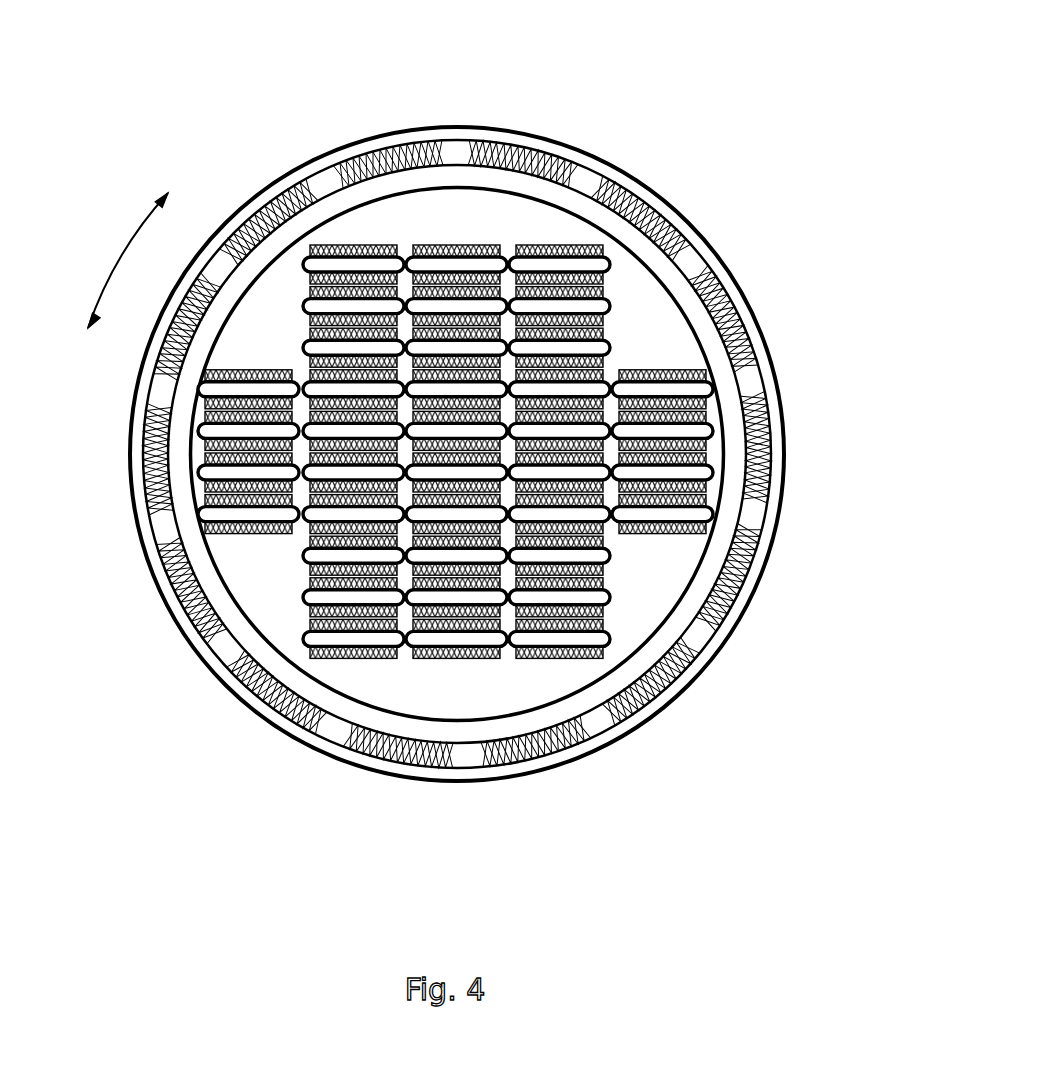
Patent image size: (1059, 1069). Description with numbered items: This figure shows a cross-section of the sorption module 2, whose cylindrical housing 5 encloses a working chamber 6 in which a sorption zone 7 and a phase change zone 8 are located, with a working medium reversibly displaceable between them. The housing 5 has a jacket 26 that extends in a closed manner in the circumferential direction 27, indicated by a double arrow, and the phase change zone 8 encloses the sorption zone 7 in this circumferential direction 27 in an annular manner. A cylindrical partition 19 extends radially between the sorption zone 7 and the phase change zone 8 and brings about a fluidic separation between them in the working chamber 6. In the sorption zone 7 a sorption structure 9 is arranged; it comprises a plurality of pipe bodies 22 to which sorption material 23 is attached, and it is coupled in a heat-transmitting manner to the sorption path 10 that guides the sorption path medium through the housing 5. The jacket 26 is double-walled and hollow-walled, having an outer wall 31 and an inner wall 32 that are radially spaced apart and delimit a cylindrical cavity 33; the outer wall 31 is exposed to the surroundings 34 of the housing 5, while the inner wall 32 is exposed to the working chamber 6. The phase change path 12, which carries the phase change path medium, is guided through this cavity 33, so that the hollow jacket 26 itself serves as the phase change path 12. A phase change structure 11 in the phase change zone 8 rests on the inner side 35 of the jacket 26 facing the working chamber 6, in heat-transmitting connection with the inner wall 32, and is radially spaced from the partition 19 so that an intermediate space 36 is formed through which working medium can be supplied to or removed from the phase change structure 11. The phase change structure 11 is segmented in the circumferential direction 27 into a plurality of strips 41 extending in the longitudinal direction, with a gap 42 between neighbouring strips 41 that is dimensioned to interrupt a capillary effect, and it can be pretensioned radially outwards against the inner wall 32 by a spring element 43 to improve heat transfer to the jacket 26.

The sorption module 2 is at (808, 162).
The housing 5 is at (457, 409).
The working chamber 6 is at (463, 403).
The sorption zone 7 is at (463, 403).
The phase change zone 8 is at (448, 143).
The sorption structure 9 is at (601, 403).
The sorption path 10 is at (310, 602).
The phase change structure 11 is at (495, 420).
The phase change path 12 is at (500, 422).
The partition 19 is at (478, 447).
The pipe bodies 22 is at (607, 342).
The sorption material 23 is at (608, 597).
The jacket 26 is at (252, 186).
The circumferential direction 27 is at (123, 258).
The outer wall 31 is at (457, 442).
The inner wall 32 is at (457, 422).
The cavity 33 is at (345, 153).
The surroundings 34 is at (42, 450).
The inner side 35 is at (330, 183).
The intermediate space 36 is at (445, 173).
The strips 41 is at (495, 417).
The gap 42 is at (501, 437).
The spring element 43 is at (602, 708).